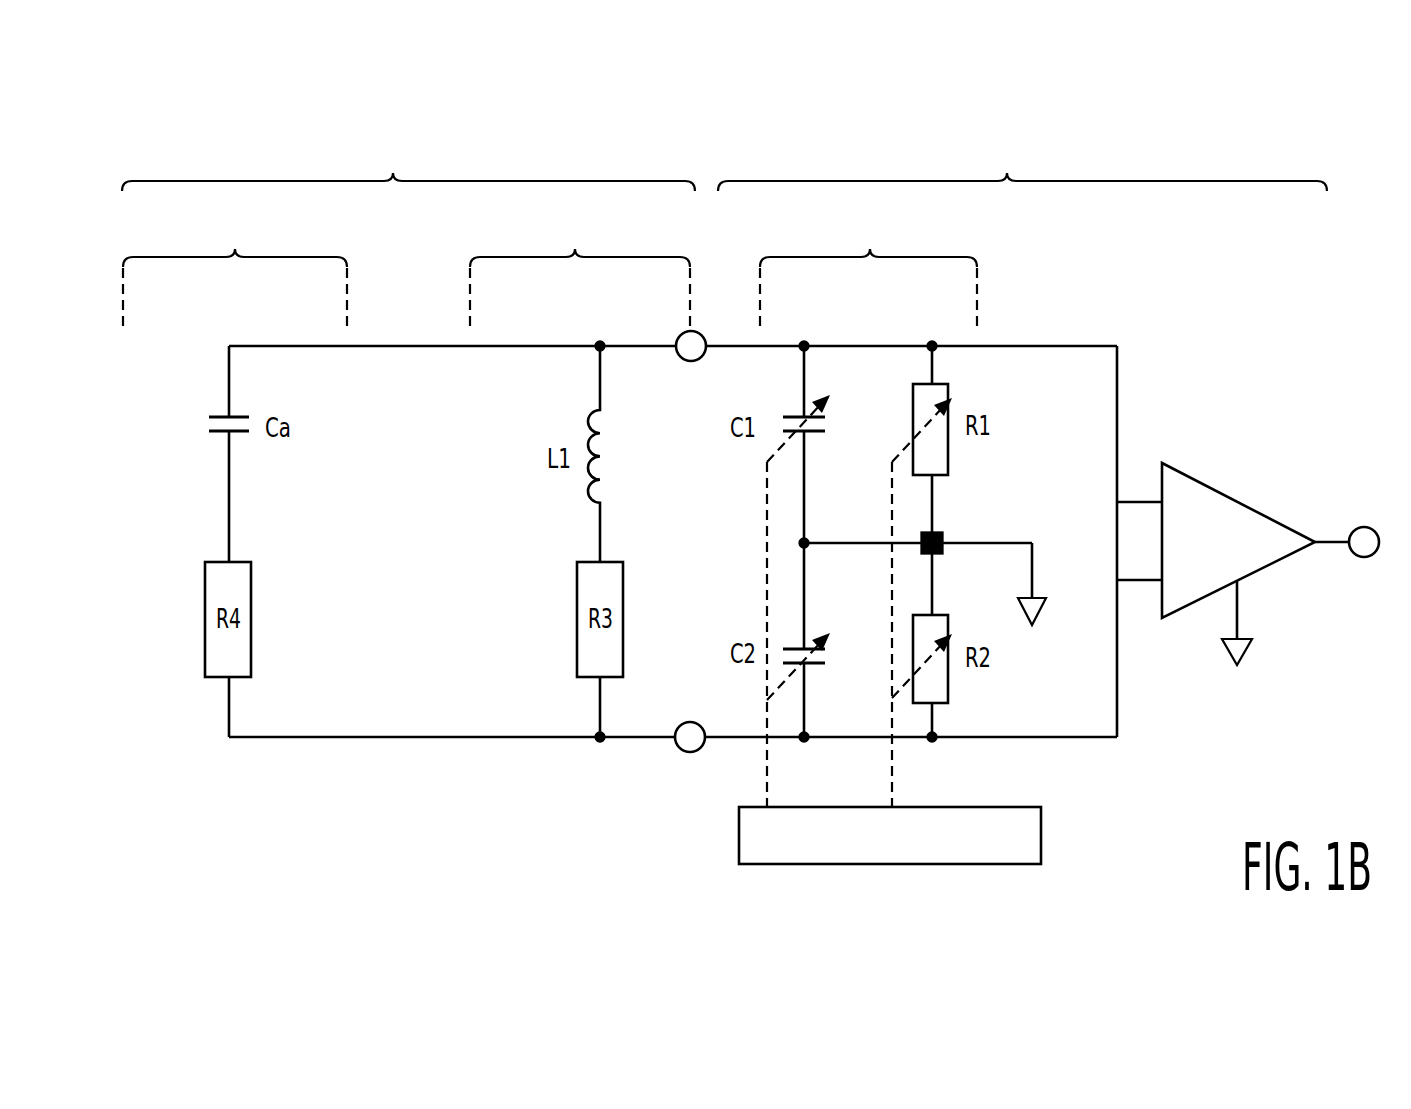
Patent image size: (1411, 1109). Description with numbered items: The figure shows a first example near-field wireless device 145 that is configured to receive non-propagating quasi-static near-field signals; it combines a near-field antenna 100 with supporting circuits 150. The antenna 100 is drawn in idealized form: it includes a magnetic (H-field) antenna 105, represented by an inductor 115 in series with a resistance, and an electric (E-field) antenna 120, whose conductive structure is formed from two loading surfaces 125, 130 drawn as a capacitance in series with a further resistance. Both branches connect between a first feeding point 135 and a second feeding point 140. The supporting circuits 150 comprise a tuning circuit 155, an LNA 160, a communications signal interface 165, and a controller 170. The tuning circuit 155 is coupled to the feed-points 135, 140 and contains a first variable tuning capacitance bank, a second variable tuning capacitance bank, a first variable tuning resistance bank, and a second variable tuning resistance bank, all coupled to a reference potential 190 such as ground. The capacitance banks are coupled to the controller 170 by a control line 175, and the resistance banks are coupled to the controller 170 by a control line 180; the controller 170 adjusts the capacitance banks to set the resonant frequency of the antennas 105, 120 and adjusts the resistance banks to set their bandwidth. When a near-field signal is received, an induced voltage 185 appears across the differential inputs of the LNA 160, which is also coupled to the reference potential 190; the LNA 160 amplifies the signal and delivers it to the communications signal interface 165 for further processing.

The near-field wireless device 145 is at (124, 142).
The near-field antenna 100 is at (408, 162).
The supporting circuits 150 is at (1022, 162).
The electric (E-field) antenna 120 is at (235, 273).
The magnetic (H-field) antenna 105 is at (580, 273).
The tuning circuit 155 is at (868, 273).
The loading surface 125 is at (246, 413).
The loading surface 130 is at (246, 435).
The inductor 115 is at (586, 424).
The first feeding point 135 is at (691, 362).
The second feeding point 140 is at (690, 752).
The control line 175 is at (767, 493).
The control line 180 is at (892, 512).
The reference potential 190 is at (1042, 612).
The induced voltage 185 is at (1100, 528).
The LNA 160 is at (1237, 498).
The communications signal interface 165 is at (1364, 527).
The controller 170 is at (1041, 835).